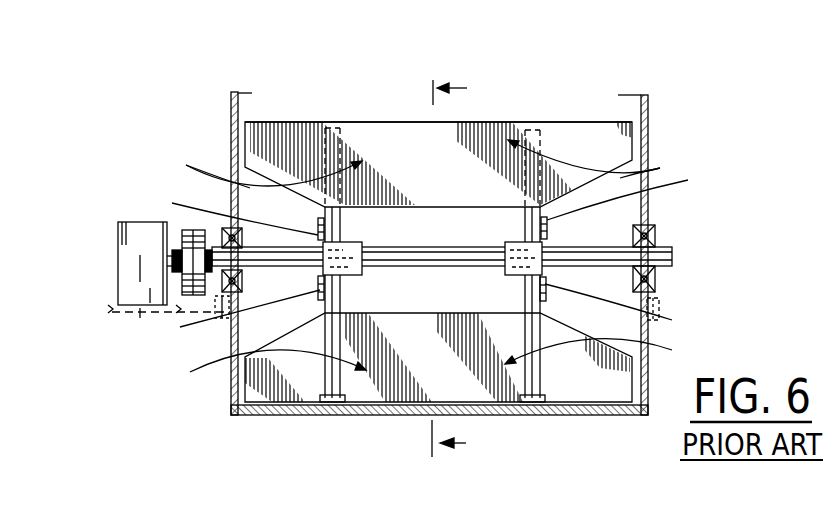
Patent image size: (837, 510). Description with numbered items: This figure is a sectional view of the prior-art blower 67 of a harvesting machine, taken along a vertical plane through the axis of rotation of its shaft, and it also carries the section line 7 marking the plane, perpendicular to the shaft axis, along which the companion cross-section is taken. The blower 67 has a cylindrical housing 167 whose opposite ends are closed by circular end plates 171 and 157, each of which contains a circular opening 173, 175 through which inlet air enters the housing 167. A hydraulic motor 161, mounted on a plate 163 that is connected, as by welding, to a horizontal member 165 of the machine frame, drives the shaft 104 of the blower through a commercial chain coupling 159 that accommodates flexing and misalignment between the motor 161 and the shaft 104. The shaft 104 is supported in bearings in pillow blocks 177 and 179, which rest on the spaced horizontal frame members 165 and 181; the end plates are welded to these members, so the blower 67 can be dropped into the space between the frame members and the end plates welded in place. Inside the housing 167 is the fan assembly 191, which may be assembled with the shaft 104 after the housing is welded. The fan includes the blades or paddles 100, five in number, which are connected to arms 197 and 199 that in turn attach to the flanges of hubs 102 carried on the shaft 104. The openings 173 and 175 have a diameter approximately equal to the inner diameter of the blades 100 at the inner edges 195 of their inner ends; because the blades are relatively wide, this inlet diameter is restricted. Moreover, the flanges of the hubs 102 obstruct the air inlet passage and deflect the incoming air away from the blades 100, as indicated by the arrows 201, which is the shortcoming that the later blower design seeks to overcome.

The blower 67 is at (442, 269).
The blades 100 is at (289, 120).
The hubs 102 is at (353, 245).
The shaft 104 is at (672, 256).
The end plate 157 is at (648, 110).
The coupling 159 is at (184, 230).
The motor 161 is at (135, 221).
The plate 163 is at (147, 322).
The horizontal member 165 is at (222, 312).
The housing 167 is at (503, 412).
The end plate 171 is at (231, 108).
The opening 173 is at (231, 163).
The opening 175 is at (660, 168).
The pillow block 177 is at (240, 240).
The pillow block 179 is at (655, 228).
The horizontal member 181 is at (655, 320).
The fan assembly 191 is at (556, 99).
The inner edges 195 is at (290, 163).
The arm 197 is at (340, 194).
The arm 199 is at (527, 193).
The arrows 201 is at (312, 223).
The section line 7— 7 is at (439, 271).